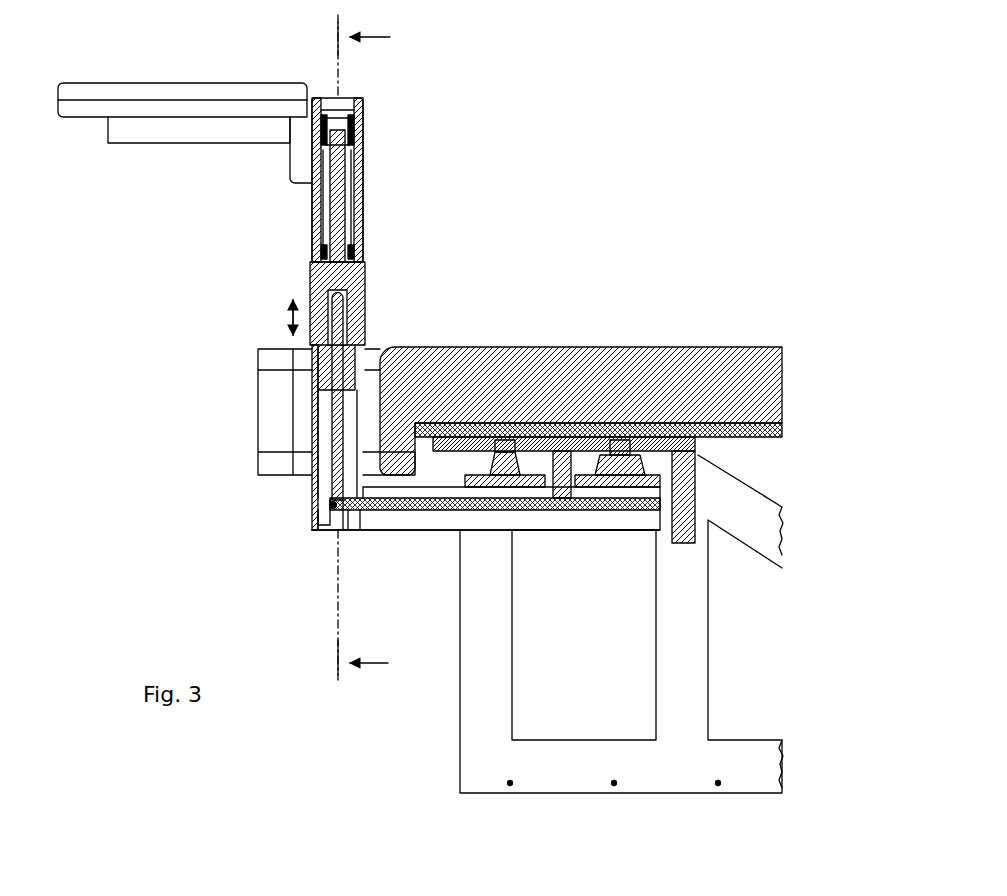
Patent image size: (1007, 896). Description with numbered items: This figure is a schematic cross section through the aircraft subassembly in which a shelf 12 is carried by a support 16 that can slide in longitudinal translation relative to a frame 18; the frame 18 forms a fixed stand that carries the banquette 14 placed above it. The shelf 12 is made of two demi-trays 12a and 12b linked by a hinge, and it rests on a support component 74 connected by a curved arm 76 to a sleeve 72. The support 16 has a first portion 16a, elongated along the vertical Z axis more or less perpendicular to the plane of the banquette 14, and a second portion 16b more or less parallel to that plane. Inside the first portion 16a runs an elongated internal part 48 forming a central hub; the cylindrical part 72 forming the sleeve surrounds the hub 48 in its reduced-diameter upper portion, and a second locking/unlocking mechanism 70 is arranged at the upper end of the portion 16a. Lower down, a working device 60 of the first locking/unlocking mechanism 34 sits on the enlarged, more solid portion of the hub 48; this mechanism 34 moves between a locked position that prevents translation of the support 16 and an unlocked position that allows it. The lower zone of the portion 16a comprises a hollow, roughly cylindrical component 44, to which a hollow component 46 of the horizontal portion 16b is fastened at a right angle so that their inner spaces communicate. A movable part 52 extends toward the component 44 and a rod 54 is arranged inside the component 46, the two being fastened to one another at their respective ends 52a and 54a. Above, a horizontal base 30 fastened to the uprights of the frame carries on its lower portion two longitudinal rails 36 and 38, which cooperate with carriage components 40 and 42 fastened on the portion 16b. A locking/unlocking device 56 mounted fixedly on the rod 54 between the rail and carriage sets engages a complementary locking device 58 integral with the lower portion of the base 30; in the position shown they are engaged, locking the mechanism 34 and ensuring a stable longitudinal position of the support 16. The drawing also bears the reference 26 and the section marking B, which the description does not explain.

The shelf 12 is at (182, 98).
The demi-tray 12a is at (78, 118).
The demi-tray 12b is at (232, 83).
The support component 74 is at (165, 130).
The curved arm 76 is at (296, 172).
The second locking/unlocking mechanism 70 is at (361, 159).
The sleeve 72 is at (312, 205).
The central hub 48 is at (352, 195).
The support 16 is at (426, 403).
The first portion of the support 16a is at (296, 420).
The second portion of the support 16b is at (410, 545).
The first locking/unlocking mechanism 34 is at (382, 294).
The working device 60 is at (310, 273).
The lift rod 52 is at (330, 455).
The end 52a is at (325, 527).
The hollow component 44 is at (328, 507).
The rod 54 is at (472, 558).
The end 54a is at (345, 530).
The hollow component 46 is at (380, 533).
The banquette 14 is at (618, 347).
The horizontal base 30 is at (703, 443).
The longitudinal rail 38 is at (625, 445).
The longitudinal rail 36 is at (505, 440).
The carriage component 40 is at (490, 440).
The carriage component 42 is at (612, 510).
The complementary locking device 58 is at (620, 452).
The locking/unlocking device 56 is at (566, 510).
The support bracket 26 is at (698, 483).
The frame 18 is at (448, 748).
The Z axis Z is at (340, 70).
The section B is at (364, 344).